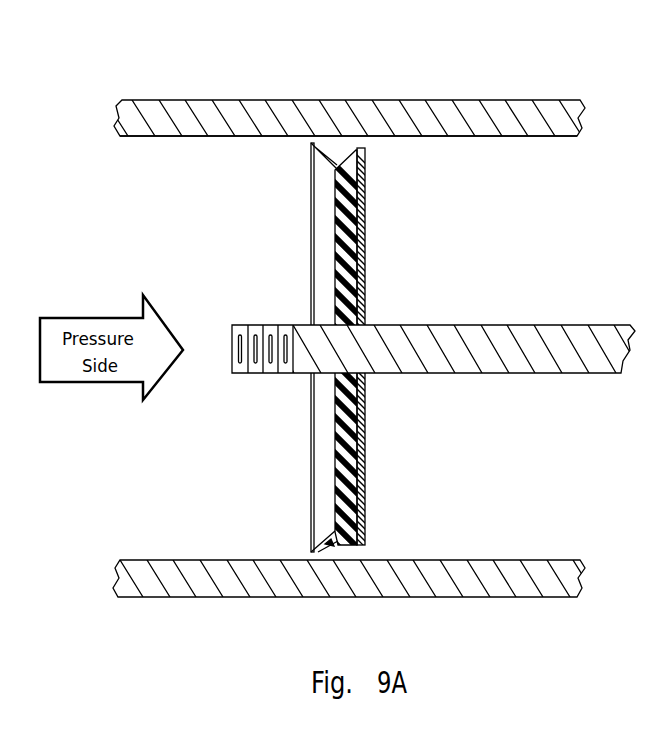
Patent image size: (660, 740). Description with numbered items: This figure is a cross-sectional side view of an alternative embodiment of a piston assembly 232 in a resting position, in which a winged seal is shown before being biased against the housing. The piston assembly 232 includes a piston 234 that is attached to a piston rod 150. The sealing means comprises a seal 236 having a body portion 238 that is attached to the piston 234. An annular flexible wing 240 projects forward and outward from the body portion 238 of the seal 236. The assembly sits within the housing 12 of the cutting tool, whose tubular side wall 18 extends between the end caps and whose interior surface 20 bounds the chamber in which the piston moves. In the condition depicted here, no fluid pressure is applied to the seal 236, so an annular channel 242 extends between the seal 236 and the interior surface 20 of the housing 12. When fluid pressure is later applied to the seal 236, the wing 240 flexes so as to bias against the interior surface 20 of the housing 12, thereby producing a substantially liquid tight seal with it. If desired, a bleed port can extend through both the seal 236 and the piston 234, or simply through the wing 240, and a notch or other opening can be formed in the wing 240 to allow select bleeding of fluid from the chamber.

The housing 12 is at (235, 100).
The tubular side wall 18 is at (417, 112).
The interior surface 20 is at (505, 136).
The piston rod 150 is at (538, 325).
The piston assembly 232 is at (190, 185).
The piston 234 is at (362, 192).
The seal 236 is at (352, 444).
The body portion 238 is at (352, 411).
The annular flexible wing 240 is at (313, 550).
The annular channel 242 is at (313, 553).